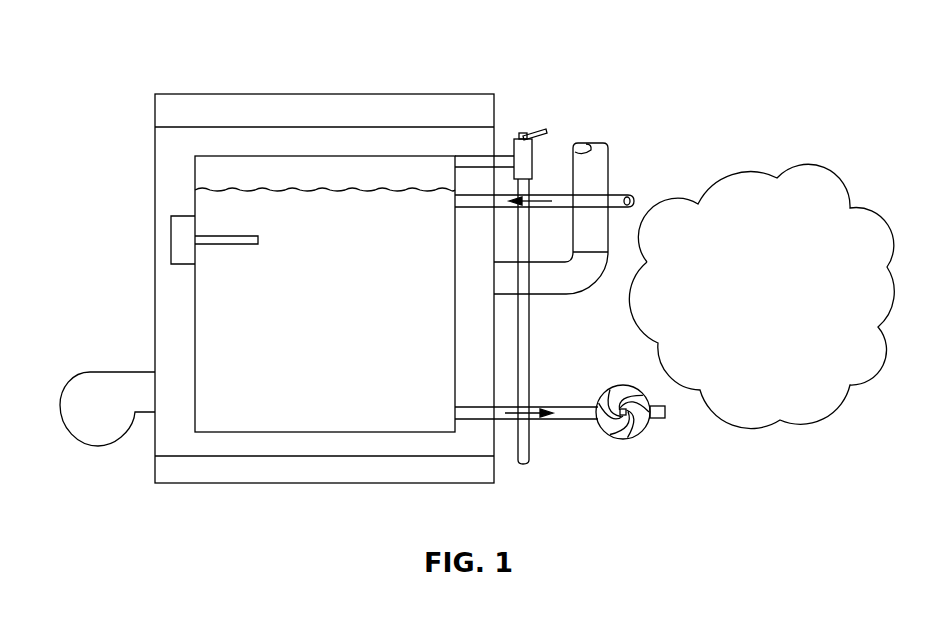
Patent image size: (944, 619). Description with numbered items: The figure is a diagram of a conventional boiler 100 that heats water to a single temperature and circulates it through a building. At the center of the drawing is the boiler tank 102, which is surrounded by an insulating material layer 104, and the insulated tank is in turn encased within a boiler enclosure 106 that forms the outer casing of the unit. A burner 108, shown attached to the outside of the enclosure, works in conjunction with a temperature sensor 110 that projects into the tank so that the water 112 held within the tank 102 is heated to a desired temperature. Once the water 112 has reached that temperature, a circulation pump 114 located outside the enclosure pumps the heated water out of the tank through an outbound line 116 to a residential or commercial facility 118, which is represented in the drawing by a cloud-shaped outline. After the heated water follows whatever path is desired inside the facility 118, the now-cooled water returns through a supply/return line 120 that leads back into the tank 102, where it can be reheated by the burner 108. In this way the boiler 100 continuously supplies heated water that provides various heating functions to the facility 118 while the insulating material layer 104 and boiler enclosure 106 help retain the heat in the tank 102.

The boiler 100 is at (106, 28).
The boiler tank 102 is at (228, 157).
The insulating material layer 104 is at (189, 330).
The boiler enclosure 106 is at (165, 94).
The burner 108 is at (67, 391).
The temperature sensor 110 is at (262, 241).
The water 112 is at (342, 311).
The circulation pump 114 is at (623, 439).
The outbound line 116 is at (548, 405).
The facility 118 is at (779, 315).
The supply/return line 120 is at (626, 195).